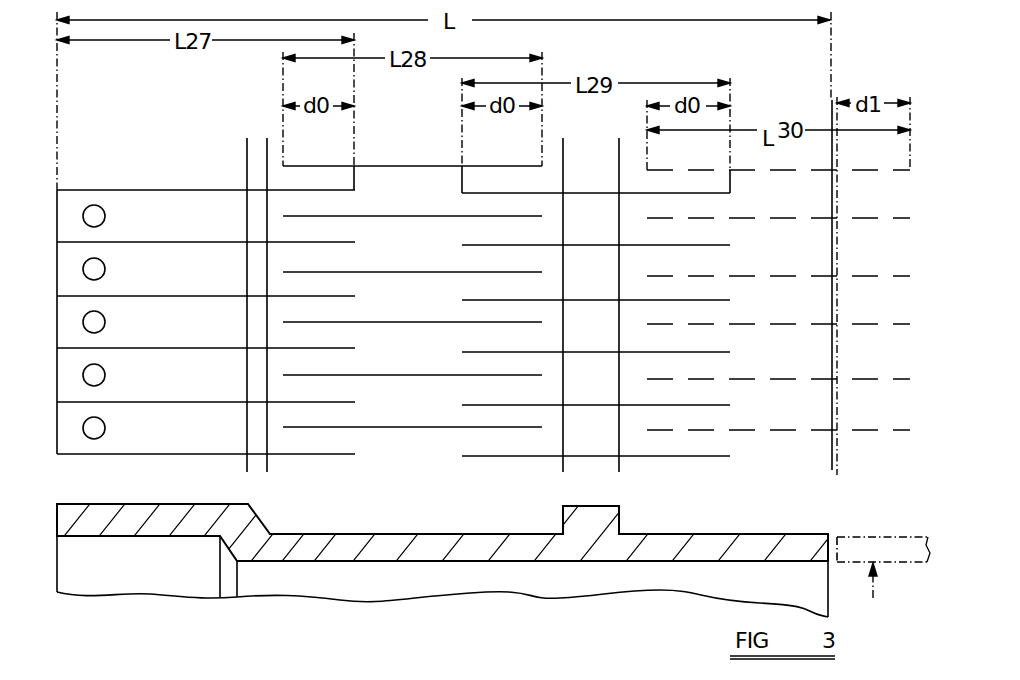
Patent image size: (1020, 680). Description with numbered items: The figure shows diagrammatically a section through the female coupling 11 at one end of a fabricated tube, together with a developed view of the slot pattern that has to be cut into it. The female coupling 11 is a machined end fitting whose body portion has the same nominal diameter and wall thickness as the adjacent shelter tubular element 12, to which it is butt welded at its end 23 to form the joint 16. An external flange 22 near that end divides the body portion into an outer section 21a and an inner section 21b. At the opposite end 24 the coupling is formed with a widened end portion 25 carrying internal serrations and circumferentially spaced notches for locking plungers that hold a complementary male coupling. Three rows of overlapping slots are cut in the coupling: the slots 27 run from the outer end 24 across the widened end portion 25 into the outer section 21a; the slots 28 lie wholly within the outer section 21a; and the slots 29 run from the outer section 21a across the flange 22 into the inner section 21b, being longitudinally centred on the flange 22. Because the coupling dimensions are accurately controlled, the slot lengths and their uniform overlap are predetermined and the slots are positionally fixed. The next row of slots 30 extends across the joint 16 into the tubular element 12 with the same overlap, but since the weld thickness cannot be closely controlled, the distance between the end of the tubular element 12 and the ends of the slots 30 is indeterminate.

The end fitting serving as a female coupling 11 is at (383, 565).
The shelter tubular element 12 is at (871, 600).
The joint 16 is at (832, 470).
The outer section of body portion 21a is at (420, 534).
The inner section of body portion 21b is at (735, 534).
The external flange 22 is at (590, 506).
The end 23 is at (836, 268).
The opposite end 24 is at (57, 520).
The widened end portion 25 is at (155, 504).
The slots 27 is at (175, 189).
The slots 28 is at (430, 166).
The slots 29 is at (672, 192).
The slots 30 is at (794, 165).